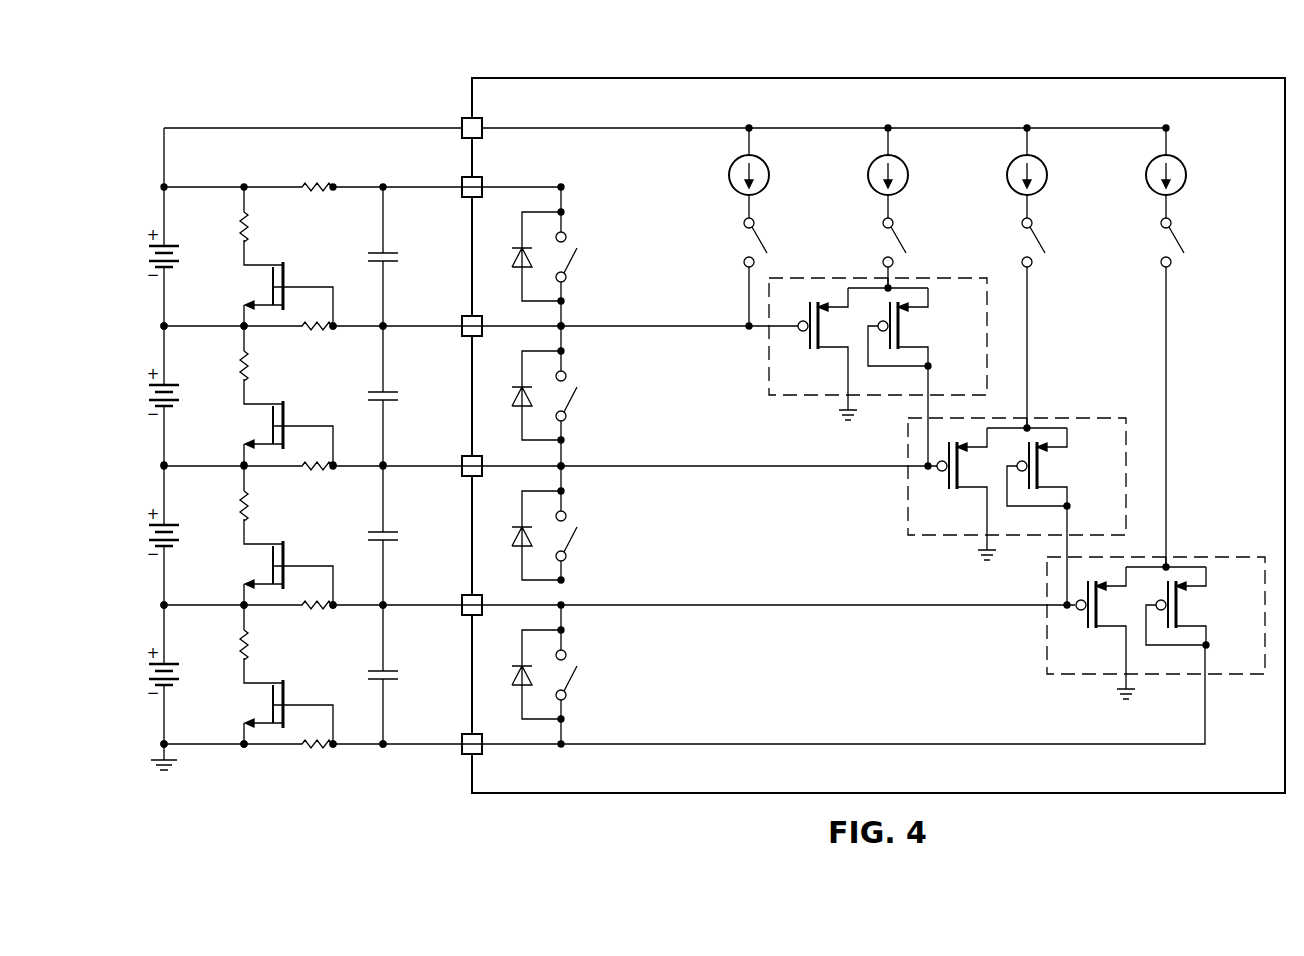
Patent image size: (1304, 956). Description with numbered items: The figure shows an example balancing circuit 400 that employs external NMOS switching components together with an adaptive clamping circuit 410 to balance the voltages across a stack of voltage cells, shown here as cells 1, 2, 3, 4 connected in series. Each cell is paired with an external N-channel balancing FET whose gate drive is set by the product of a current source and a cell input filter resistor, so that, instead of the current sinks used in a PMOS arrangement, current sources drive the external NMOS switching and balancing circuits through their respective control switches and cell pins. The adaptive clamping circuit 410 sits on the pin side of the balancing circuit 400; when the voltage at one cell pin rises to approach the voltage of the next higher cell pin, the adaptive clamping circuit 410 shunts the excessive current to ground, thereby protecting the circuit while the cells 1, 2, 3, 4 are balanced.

The balancing circuit 400 is at (373, 68).
The adaptive clamping circuit 410 is at (797, 395).
The cell 1 is at (130, 674).
The cell 2 is at (130, 535).
The cell 3 is at (130, 395).
The cell 4 is at (130, 256).